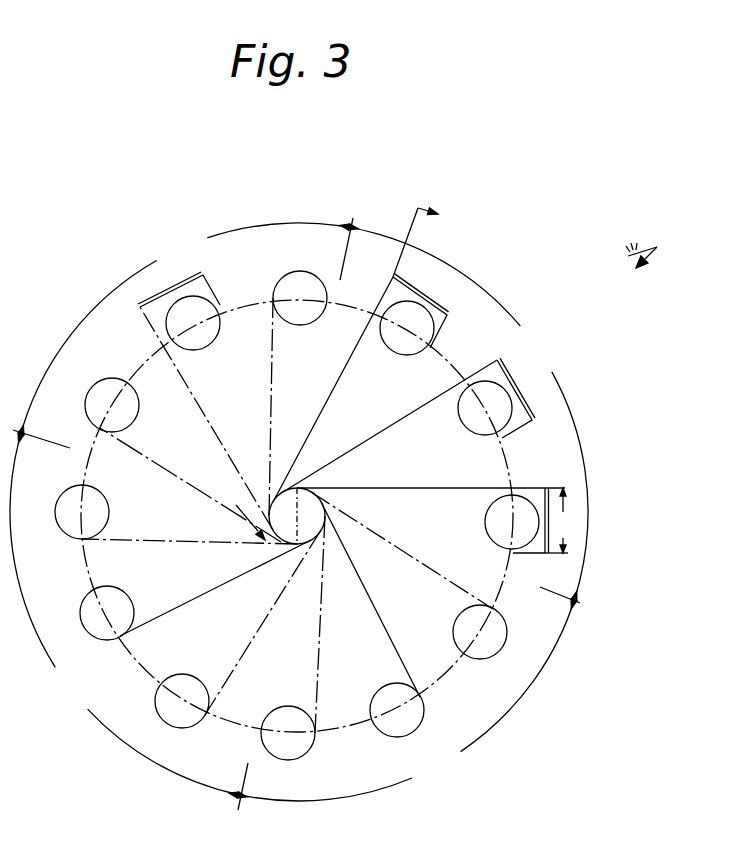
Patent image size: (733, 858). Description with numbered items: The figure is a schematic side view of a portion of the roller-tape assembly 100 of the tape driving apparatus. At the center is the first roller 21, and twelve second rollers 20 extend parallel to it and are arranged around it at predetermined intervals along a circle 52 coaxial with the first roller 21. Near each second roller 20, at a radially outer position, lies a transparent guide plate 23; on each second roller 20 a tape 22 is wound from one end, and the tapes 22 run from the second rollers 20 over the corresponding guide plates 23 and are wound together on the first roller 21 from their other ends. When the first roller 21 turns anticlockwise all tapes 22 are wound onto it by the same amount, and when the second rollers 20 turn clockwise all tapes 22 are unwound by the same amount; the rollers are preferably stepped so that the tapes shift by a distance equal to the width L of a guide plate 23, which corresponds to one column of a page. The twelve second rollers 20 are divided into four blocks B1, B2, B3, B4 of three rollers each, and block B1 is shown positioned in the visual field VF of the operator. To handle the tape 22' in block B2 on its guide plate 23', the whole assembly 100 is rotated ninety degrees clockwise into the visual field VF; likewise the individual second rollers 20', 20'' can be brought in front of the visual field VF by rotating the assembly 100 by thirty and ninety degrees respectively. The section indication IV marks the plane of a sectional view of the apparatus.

The roller-tape assembly 100 is at (581, 437).
The circle 52 is at (458, 657).
The first roller 21 is at (304, 548).
The tape 22 is at (323, 470).
The tape 22' is at (190, 476).
The second roller 20 is at (297, 515).
The second roller 20' is at (212, 344).
The second roller 20'' is at (400, 348).
The guide plate 23 is at (480, 400).
The guide plate 23' is at (158, 312).
The width of the guide plate L is at (562, 520).
The section line IV- IV is at (341, 373).
The block B1 is at (460, 413).
The block B2 is at (106, 343).
The block B3 is at (147, 747).
The block B4 is at (434, 761).
The visual field VF is at (639, 236).